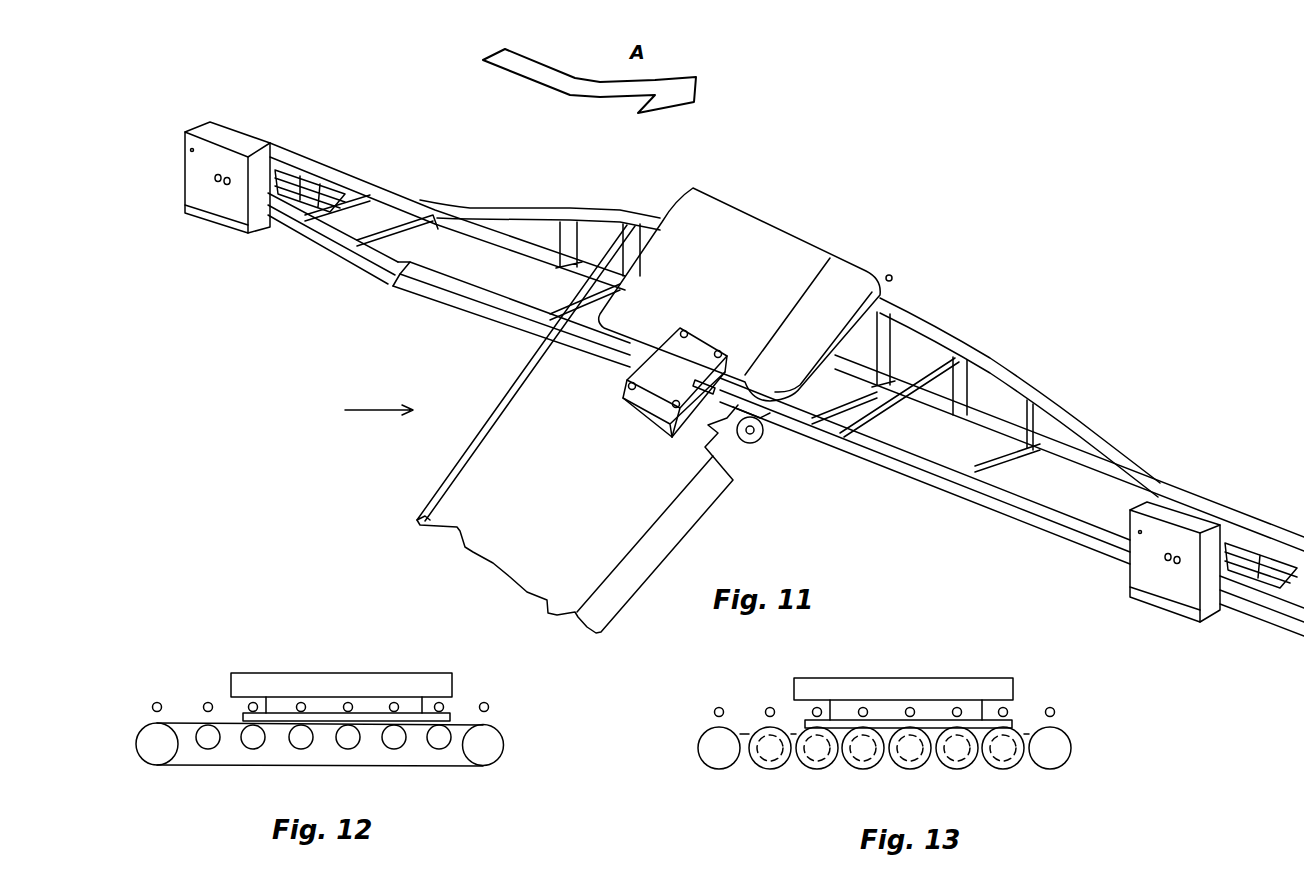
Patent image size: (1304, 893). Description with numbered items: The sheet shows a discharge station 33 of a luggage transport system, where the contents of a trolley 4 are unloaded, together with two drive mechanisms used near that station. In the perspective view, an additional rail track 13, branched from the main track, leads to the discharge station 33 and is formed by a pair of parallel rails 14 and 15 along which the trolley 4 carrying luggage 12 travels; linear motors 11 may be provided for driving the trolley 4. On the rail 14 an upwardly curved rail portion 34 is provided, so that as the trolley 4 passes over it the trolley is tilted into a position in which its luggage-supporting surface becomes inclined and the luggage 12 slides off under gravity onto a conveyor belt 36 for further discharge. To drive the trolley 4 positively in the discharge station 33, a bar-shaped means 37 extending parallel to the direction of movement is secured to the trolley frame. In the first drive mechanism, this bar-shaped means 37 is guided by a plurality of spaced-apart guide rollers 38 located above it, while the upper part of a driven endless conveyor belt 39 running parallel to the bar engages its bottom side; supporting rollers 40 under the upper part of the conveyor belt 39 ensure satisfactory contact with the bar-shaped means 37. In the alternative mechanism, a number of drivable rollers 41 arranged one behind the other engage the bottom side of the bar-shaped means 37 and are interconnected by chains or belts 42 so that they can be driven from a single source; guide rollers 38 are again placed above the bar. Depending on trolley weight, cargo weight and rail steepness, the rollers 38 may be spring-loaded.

In FIG. 11, the trolley 4 is at (833, 270).
In FIG. 12, the trolley 4 is at (253, 684).
In FIG. 13, the trolley 4 is at (910, 693).
In FIG. 11, the linear motors 11 is at (337, 170).
In FIG. 11, the luggage 12 is at (640, 407).
In FIG. 11, the additional rail track 13 is at (453, 182).
In FIG. 11, the rail 14 is at (323, 158).
In FIG. 11, the rail 15 is at (303, 235).
In FIG. 11, the discharge station 33 is at (360, 405).
In FIG. 11, the upwardly curved rail portion 34 is at (1017, 392).
In FIG. 11, the conveyor belt 36 is at (697, 498).
In FIG. 12, the bar-shaped means 37 is at (337, 716).
In FIG. 12, the guide rollers 38 is at (158, 702).
In FIG. 13, the guide rollers 38 is at (1005, 707).
In FIG. 12, the driven endless conveyor belt 39 is at (460, 768).
In FIG. 12, the supporting rollers 40 is at (209, 738).
In FIG. 13, the rollers 41 is at (765, 768).
In FIG. 13, the chains or belts 42 is at (794, 760).